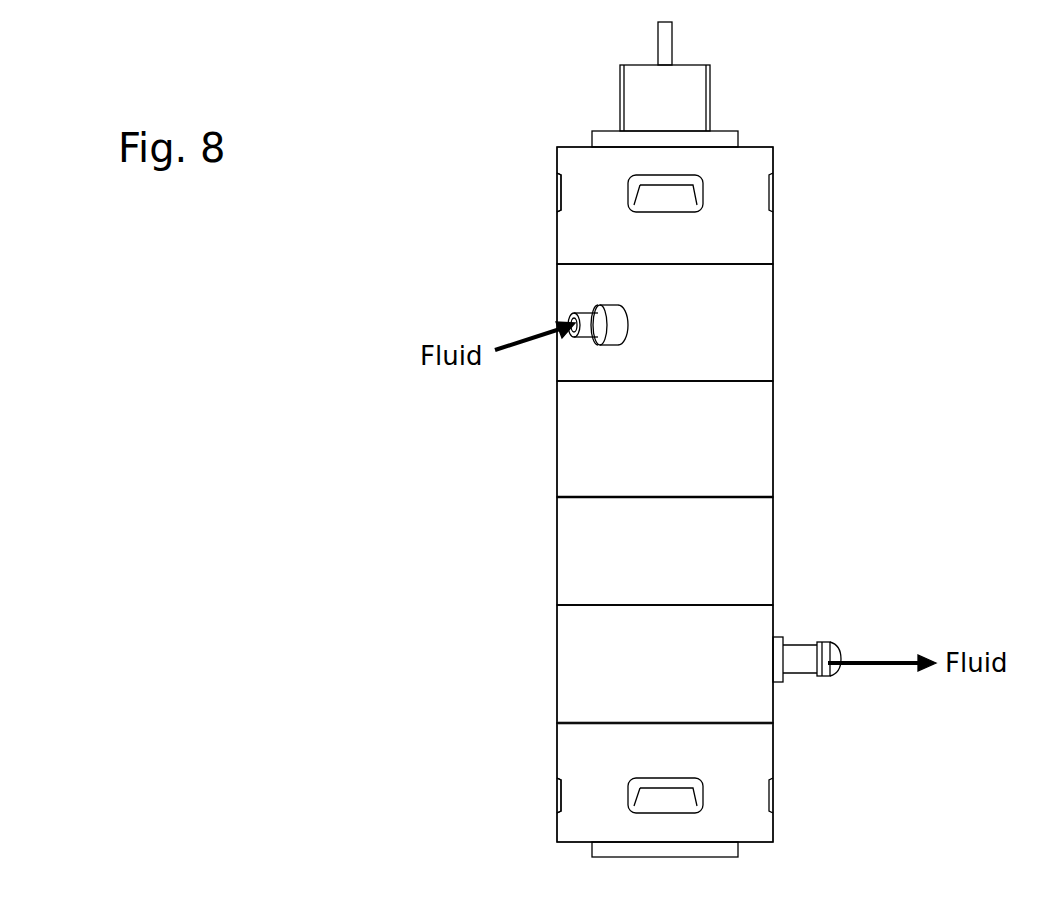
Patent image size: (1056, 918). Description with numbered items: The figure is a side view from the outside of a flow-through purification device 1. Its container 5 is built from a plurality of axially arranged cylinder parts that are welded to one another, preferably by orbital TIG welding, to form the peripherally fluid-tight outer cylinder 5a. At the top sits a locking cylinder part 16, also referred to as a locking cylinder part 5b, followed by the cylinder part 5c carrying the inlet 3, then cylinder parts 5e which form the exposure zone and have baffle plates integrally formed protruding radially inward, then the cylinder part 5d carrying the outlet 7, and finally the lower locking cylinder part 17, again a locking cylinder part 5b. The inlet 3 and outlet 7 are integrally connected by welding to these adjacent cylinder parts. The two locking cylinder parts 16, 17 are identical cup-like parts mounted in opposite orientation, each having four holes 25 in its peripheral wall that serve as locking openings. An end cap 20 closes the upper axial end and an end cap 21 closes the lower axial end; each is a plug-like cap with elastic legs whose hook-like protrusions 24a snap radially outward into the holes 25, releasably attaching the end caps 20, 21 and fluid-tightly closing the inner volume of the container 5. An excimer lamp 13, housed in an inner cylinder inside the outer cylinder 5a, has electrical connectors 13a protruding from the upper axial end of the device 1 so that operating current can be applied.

The device 1 is at (527, 125).
The inlet 3 is at (608, 323).
The container 5 is at (737, 549).
The outer cylinder 5a is at (725, 440).
The locking cylinder part 5b is at (755, 513).
The cylinder part with inlet 5c is at (730, 353).
The cylinder part with outlet 5d is at (577, 625).
The exposure zone cylinder part 5e is at (577, 433).
The outlet 7 is at (797, 662).
The excimer lamp 13 is at (697, 100).
The electrical connectors 13a is at (665, 37).
The locking cylinder part 16 is at (745, 198).
The locking cylinder part 17 is at (725, 801).
The end cap 20 is at (720, 140).
The end cap 21 is at (658, 848).
The hook-like protrusions 24a is at (648, 188).
The holes 25 is at (672, 190).